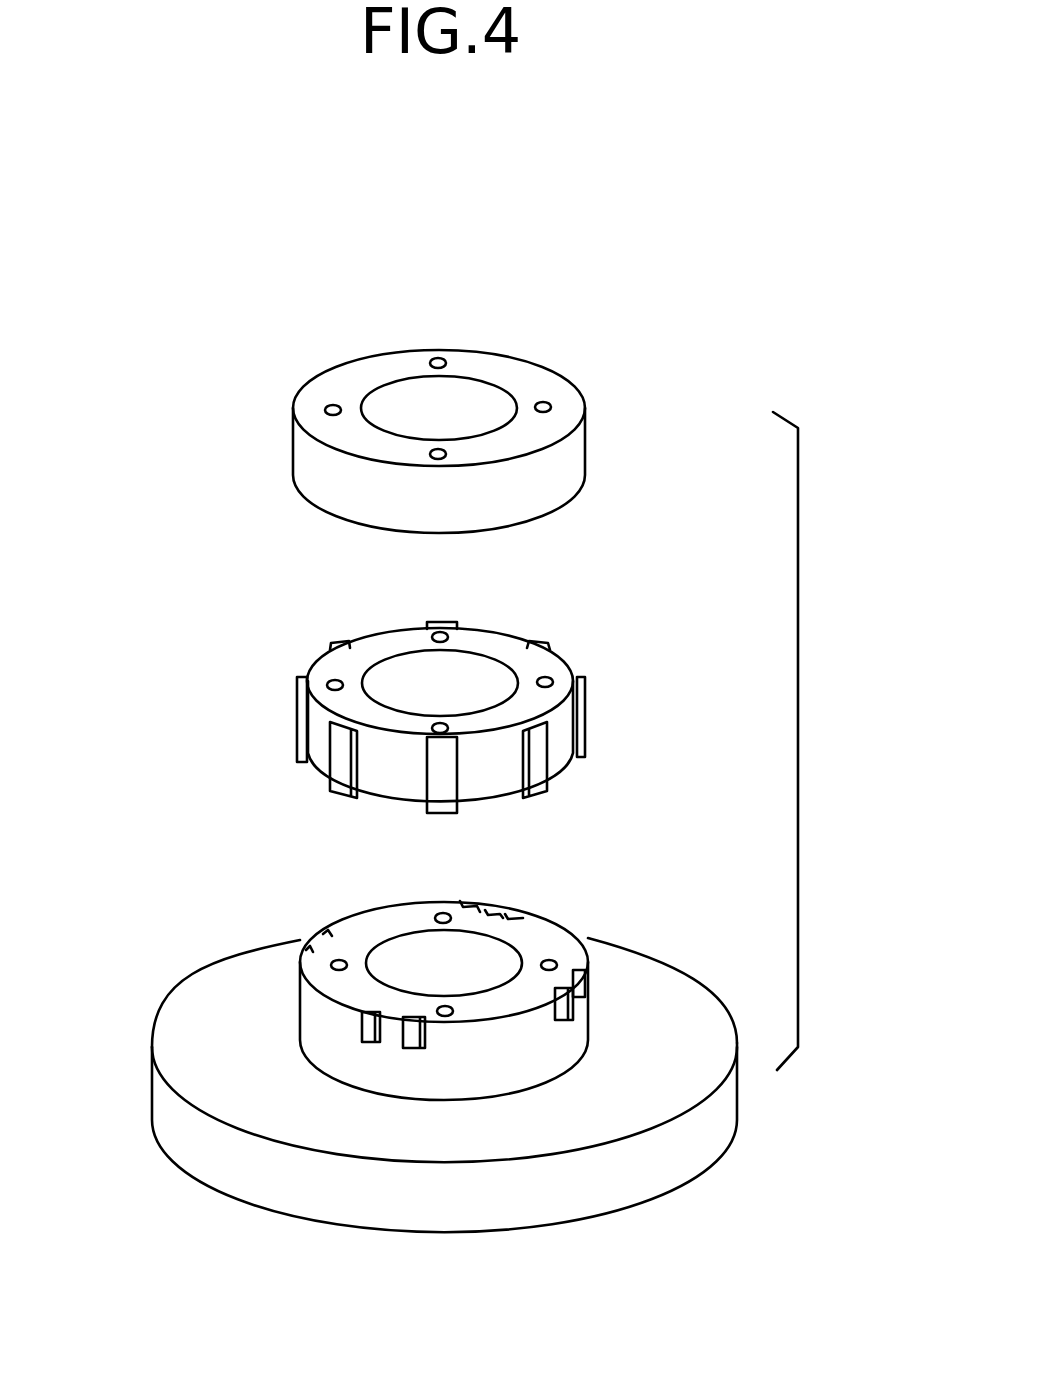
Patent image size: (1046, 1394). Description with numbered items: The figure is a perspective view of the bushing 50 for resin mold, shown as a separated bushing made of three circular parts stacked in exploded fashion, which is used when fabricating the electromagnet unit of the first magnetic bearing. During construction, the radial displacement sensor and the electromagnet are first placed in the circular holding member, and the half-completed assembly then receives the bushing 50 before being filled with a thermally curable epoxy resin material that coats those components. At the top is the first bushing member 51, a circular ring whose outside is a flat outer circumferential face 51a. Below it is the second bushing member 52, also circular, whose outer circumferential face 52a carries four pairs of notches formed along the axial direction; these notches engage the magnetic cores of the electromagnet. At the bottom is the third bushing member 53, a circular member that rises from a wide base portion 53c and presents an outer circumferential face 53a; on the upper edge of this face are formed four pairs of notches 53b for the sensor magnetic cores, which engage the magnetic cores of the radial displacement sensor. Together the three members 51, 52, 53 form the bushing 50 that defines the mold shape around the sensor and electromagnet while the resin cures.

The bushing for resin mold 50 is at (848, 709).
The first bushing member 51 is at (448, 425).
The flat outer circumferential face 51a is at (562, 470).
The second bushing member 52 is at (452, 689).
The outer circumferential face 52a is at (558, 742).
The third bushing member 53 is at (438, 1067).
The outer circumferential face 53a is at (333, 1030).
The notches for sensor magnetic cores 53b is at (590, 982).
The base portion 53c is at (660, 1162).